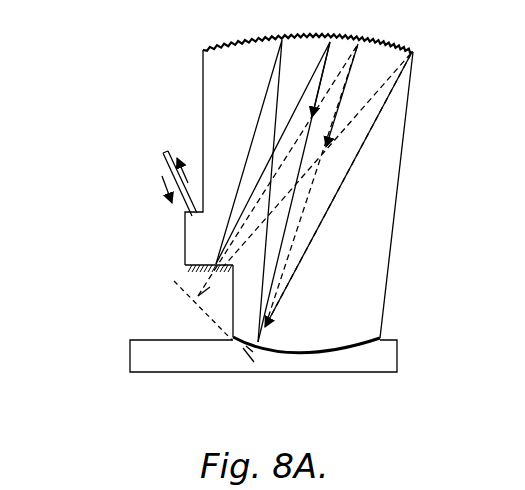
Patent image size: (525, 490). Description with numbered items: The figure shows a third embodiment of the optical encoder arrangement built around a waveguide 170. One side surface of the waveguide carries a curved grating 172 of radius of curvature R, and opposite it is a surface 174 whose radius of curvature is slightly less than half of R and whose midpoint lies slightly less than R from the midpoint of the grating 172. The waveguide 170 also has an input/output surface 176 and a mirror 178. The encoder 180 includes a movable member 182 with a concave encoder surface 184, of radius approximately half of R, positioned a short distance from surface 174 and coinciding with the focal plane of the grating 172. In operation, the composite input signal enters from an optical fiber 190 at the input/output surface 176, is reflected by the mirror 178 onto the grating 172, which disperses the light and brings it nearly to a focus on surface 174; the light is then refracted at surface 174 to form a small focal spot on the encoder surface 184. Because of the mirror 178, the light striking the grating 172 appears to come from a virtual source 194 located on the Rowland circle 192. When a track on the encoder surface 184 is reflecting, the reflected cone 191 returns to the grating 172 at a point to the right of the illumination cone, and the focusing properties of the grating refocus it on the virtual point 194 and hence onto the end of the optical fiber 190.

The waveguide 170 is at (413, 95).
The grating 172 is at (355, 38).
The surface 174 is at (310, 349).
The input/output surface 176 is at (185, 216).
The mirror 178 is at (185, 268).
The encoder 180 is at (136, 253).
The movable member 182 is at (136, 355).
The concave encoder surface 184 is at (315, 357).
The optical fiber 190 is at (163, 165).
The reflected cone 191 is at (290, 275).
The Rowland circle 192 is at (200, 323).
The virtual source 194 is at (196, 303).